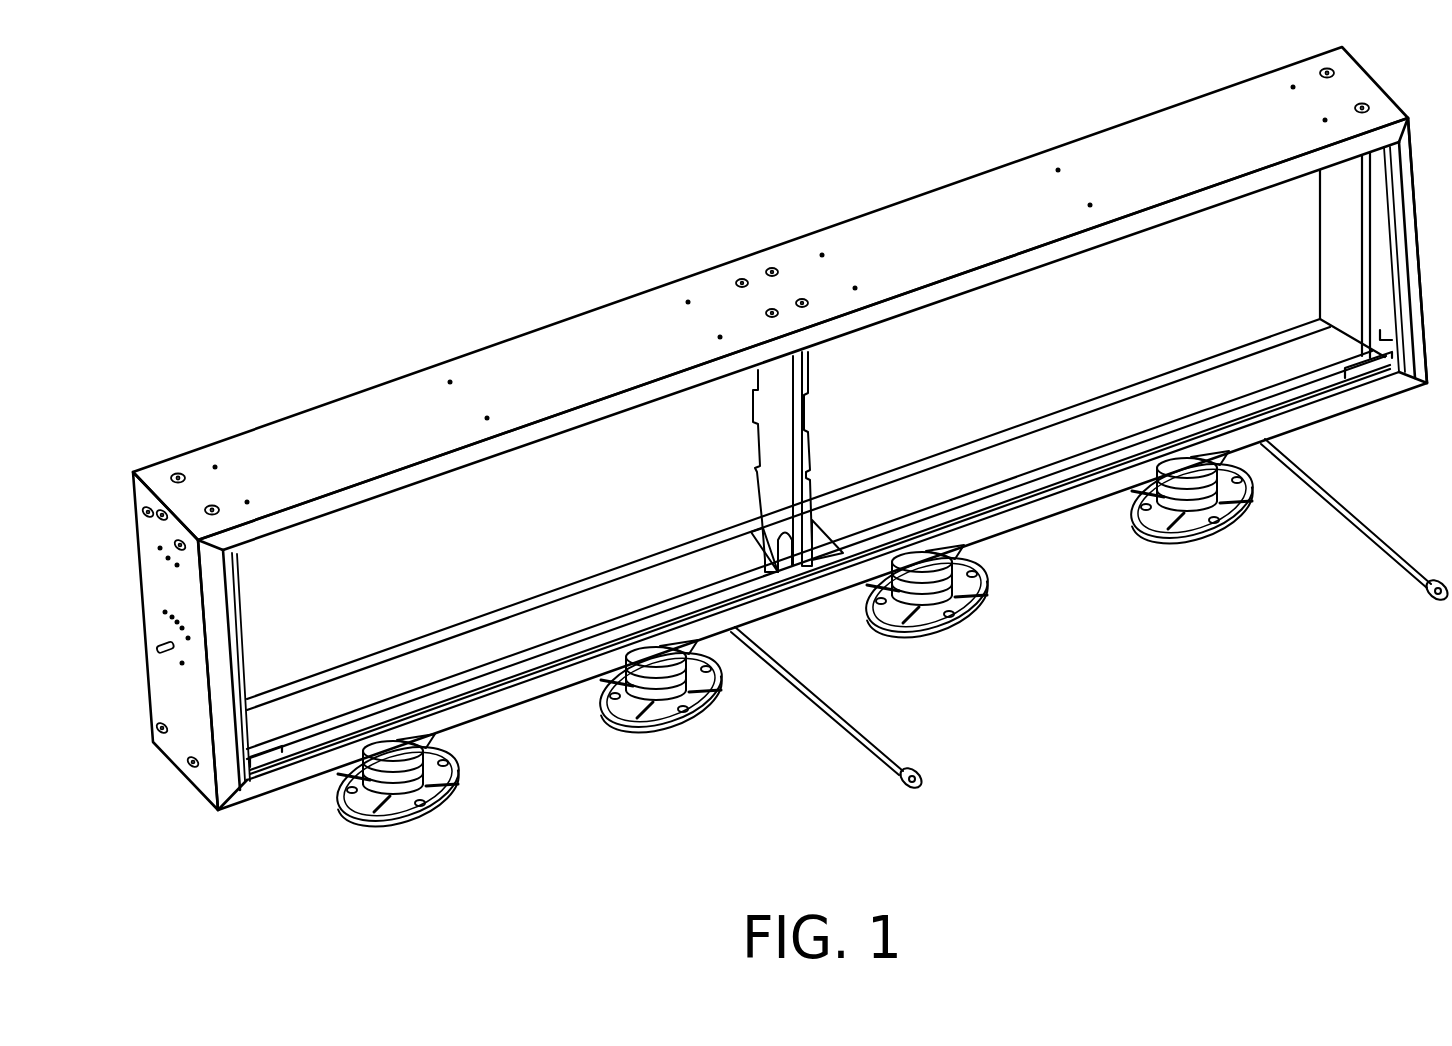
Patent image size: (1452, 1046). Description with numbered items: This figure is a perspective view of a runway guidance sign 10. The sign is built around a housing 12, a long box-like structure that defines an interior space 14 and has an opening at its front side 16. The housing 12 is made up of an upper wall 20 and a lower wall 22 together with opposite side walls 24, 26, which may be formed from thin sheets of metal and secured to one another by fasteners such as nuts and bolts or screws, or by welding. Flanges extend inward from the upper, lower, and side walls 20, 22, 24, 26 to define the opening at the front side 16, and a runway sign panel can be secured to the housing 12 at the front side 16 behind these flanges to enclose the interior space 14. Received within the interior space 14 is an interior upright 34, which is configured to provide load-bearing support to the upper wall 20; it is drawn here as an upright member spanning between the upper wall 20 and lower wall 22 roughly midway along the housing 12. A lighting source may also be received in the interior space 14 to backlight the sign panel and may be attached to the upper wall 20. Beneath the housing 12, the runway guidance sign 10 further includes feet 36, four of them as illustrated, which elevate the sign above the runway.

The runway guidance sign 10 is at (421, 257).
The housing 12 is at (901, 190).
The interior space 14 is at (1127, 308).
The front side 16 is at (639, 438).
The upper wall 20 is at (397, 419).
The lower wall 22 is at (515, 706).
The side wall 24 is at (163, 534).
The side wall 26 is at (1414, 160).
The interior upright 34 is at (832, 462).
The feet 36 is at (350, 800).